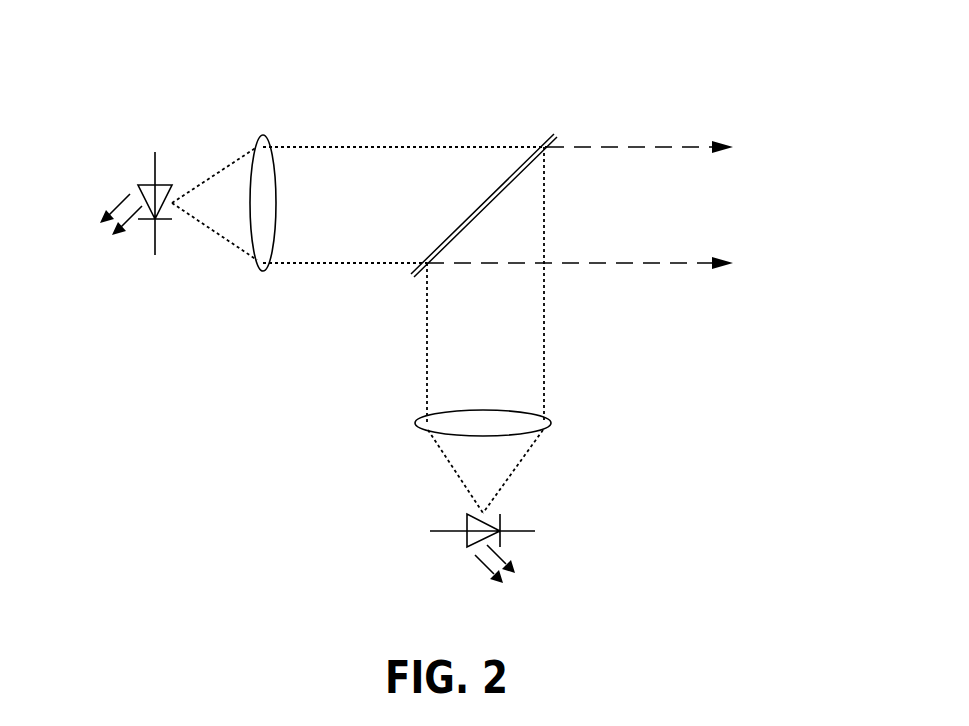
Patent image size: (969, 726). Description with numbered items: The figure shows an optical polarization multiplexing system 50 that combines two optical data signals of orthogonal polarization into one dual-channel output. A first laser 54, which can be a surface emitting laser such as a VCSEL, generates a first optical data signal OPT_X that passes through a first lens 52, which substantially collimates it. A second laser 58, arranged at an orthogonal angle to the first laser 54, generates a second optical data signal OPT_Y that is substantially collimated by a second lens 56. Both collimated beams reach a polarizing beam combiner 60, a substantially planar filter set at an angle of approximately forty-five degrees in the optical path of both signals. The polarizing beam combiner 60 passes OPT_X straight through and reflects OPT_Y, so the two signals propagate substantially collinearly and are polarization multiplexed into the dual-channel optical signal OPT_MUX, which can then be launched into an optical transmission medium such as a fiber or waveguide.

The optical polarization multiplexing system 50 is at (137, 84).
The first lens 52 is at (257, 147).
The first laser 54 is at (150, 183).
The second lens 56 is at (420, 425).
The second laser 58 is at (467, 520).
The polarizing beam combiner 60 is at (547, 140).